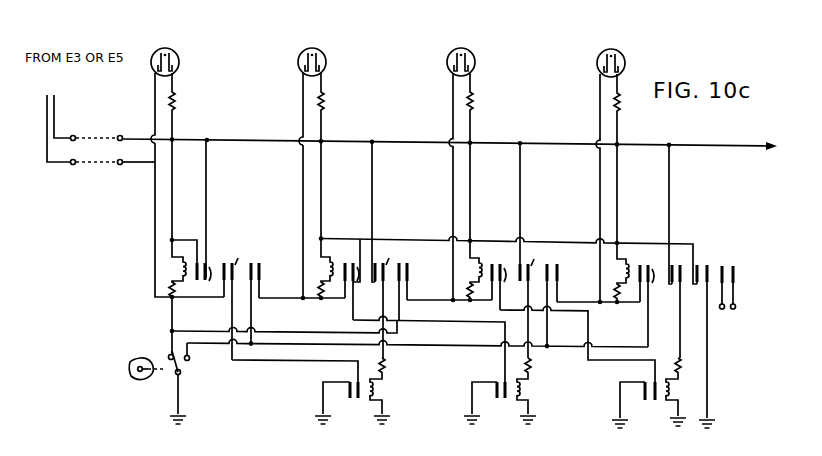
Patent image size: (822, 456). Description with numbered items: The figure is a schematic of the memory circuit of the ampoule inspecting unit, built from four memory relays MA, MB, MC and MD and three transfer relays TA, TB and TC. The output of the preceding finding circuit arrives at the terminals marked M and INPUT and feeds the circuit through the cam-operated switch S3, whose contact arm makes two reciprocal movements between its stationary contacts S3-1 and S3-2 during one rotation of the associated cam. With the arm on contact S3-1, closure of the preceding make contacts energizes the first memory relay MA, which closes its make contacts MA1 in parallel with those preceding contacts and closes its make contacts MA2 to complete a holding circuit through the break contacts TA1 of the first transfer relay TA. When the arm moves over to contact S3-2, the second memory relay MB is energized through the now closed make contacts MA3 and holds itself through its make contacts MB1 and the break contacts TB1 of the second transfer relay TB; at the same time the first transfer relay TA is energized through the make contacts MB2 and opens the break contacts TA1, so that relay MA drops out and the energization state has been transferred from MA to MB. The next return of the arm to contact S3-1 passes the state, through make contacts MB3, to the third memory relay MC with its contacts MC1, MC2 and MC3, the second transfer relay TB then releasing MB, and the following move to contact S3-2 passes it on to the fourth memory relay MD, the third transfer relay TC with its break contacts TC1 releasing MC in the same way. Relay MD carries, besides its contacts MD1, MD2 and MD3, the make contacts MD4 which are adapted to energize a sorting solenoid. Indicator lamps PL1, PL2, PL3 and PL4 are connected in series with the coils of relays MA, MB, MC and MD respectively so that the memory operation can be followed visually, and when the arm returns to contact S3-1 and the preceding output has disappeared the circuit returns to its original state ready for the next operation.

The motor input terminals M is at (82, 118).
The input connection INPUT is at (127, 138).
The indicator lamp PL1 is at (163, 84).
The indicator lamp PL2 is at (309, 85).
The indicator lamp PL3 is at (458, 86).
The indicator lamp PL4 is at (608, 87).
The first memory relay MA is at (189, 220).
The make contacts of first memory relay MA1 is at (200, 281).
The make contacts of first memory relay MA2 is at (230, 301).
The make contacts of first memory relay MA3 is at (274, 304).
The second memory relay MB is at (306, 220).
The make contacts of second memory relay MB1 is at (341, 279).
The make contacts of second memory relay MB2 is at (393, 301).
The make contacts of second memory relay MB3 is at (425, 291).
The third memory relay MC is at (454, 223).
The make contacts of third memory relay MC1 is at (493, 277).
The make contacts of third memory relay MC2 is at (539, 301).
The make contacts of third memory relay MC3 is at (572, 305).
The fourth memory relay MD is at (605, 224).
The contacts of fourth memory relay MD1 is at (642, 295).
The contacts of fourth memory relay MD2 is at (676, 264).
The contacts of fourth memory relay MD3 is at (717, 337).
The make contacts of fourth memory relay MD4 is at (749, 287).
The cam-operated switch S3 is at (181, 377).
The stationary contact S3-1 is at (168, 355).
The stationary contact S3-2 is at (190, 361).
The first transfer relay TA is at (388, 391).
The break contacts of first transfer relay TA1 is at (341, 403).
The second transfer relay TB is at (538, 391).
The break contacts of second transfer relay TB1 is at (490, 403).
The third transfer relay TC is at (683, 392).
The break contacts of third transfer relay TC1 is at (638, 405).